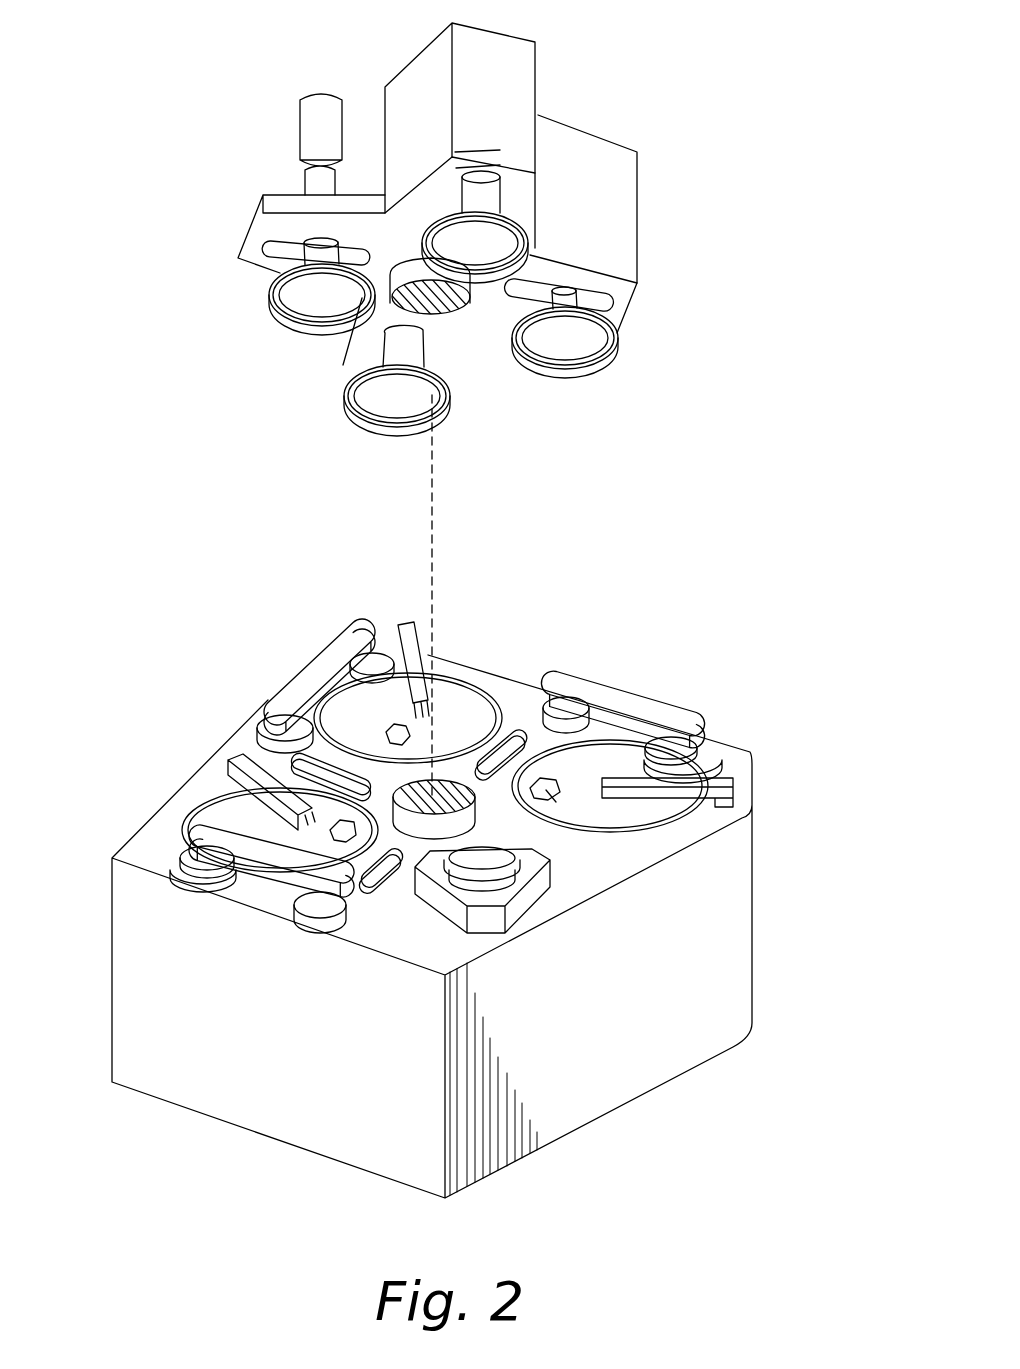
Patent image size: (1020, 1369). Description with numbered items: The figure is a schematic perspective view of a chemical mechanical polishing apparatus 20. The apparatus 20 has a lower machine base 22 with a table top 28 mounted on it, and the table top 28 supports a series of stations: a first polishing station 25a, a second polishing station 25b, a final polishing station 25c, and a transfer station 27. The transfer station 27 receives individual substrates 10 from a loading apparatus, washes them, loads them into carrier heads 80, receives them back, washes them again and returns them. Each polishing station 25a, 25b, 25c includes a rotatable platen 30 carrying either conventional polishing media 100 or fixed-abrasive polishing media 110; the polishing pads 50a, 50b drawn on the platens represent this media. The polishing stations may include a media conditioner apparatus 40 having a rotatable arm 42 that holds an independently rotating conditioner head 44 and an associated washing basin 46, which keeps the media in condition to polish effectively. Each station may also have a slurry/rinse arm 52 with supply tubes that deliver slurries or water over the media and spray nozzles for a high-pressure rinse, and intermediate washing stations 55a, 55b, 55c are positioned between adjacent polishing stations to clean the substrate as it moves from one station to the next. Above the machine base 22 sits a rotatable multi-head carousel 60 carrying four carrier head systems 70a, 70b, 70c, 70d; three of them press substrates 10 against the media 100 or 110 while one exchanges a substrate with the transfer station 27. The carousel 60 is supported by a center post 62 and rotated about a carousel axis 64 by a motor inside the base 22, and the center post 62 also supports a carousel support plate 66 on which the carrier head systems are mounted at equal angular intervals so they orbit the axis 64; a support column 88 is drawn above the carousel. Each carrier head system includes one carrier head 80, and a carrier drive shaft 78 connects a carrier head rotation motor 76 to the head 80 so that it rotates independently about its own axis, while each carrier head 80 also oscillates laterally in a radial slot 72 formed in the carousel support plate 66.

The chemical mechanical polishing apparatus 20 is at (690, 28).
The lower machine base 22 is at (120, 1013).
The first polishing station 25a is at (608, 843).
The second polishing station 25b is at (466, 700).
The final polishing station 25c is at (214, 778).
The transfer station 27 is at (442, 920).
The table top 28 is at (160, 850).
The rotatable platen 30 is at (460, 700).
The media conditioner apparatus 40 is at (295, 657).
The rotatable arm 42 is at (342, 640).
The conditioner head 44 is at (378, 652).
The washing basin 46 is at (712, 748).
The polishing pad 50a is at (388, 735).
The polishing pad 50b is at (356, 842).
The slurry/rinse arm 52 is at (408, 622).
The intermediate washing station 55a is at (510, 738).
The intermediate washing station 55b is at (302, 760).
The intermediate washing station 55c is at (370, 892).
The rotatable multi-head carousel 60 is at (693, 264).
The center post 62 is at (447, 308).
The carousel axis 64 is at (440, 522).
The carousel support plate 66 is at (240, 238).
The carrier head system 70a is at (622, 347).
The carrier head system 70b is at (343, 416).
The carrier head system 70c is at (302, 328).
The carrier head system 70d is at (527, 235).
The radial slot 72 is at (500, 188).
The carrier head rotation motor 76 is at (298, 127).
The carrier drive shaft 78 is at (478, 200).
The carrier head 80 is at (560, 258).
The substrate 10 is at (505, 218).
The carousel support column 88 is at (538, 66).
The conventional polishing media 100 is at (445, 660).
The fixed-abrasive polishing media 110 is at (205, 792).